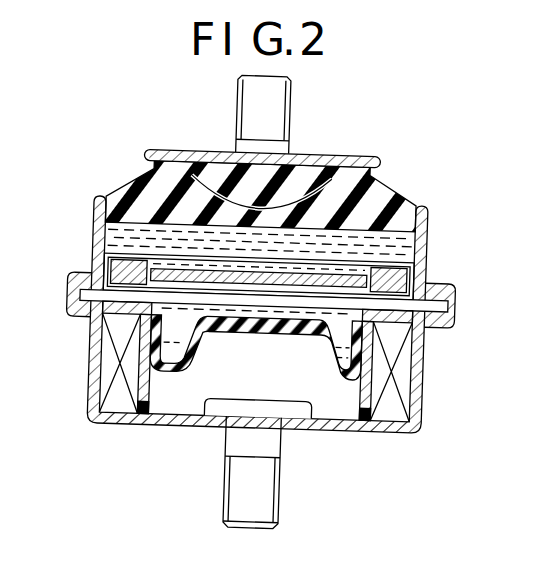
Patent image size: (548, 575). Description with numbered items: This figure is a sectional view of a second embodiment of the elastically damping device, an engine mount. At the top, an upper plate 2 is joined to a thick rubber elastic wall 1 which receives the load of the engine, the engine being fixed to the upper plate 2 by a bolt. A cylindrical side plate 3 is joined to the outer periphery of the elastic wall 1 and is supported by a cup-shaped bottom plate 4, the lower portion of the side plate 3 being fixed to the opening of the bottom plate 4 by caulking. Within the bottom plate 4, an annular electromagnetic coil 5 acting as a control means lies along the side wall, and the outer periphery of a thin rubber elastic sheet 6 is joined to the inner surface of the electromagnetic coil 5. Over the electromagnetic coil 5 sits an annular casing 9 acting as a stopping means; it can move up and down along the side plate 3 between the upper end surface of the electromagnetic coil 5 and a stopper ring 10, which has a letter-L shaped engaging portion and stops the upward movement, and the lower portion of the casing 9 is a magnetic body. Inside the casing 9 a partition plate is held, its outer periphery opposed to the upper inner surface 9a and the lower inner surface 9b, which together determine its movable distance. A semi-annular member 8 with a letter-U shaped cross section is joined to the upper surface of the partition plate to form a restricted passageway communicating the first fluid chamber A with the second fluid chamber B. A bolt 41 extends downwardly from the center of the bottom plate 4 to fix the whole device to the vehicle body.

The rubber elastic wall 1 is at (124, 201).
The upper plate 2 is at (153, 156).
The cylindrical side plate 3 is at (90, 245).
The cup-shaped bottom plate 4 is at (100, 392).
The electromagnetic coil 5 is at (127, 421).
The rubber elastic sheet 6 is at (164, 371).
The semi-annular member 8 is at (276, 272).
The annular casing 9 is at (80, 298).
The upper inner surface 9a is at (318, 160).
The lower inner surface 9b is at (118, 319).
The stopper ring 10 is at (118, 250).
The bolt 41 is at (273, 500).
The first fluid chamber A is at (186, 235).
The second fluid chamber B is at (257, 341).